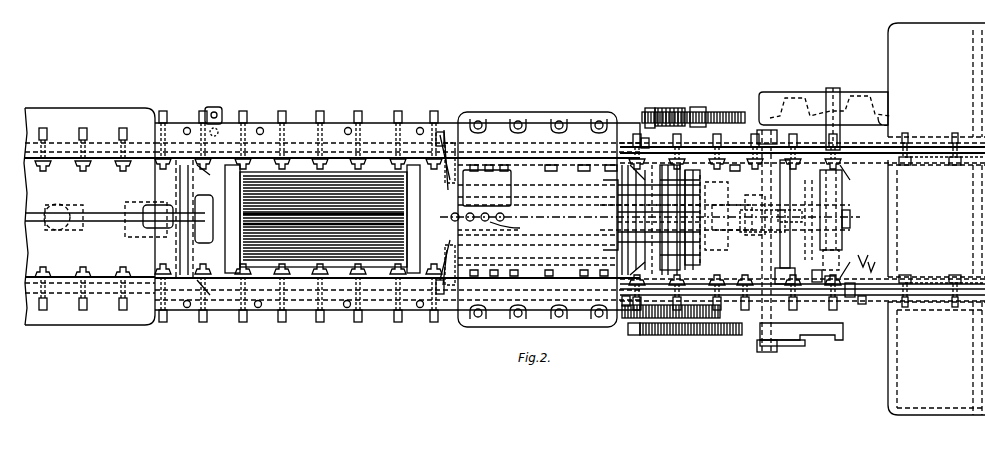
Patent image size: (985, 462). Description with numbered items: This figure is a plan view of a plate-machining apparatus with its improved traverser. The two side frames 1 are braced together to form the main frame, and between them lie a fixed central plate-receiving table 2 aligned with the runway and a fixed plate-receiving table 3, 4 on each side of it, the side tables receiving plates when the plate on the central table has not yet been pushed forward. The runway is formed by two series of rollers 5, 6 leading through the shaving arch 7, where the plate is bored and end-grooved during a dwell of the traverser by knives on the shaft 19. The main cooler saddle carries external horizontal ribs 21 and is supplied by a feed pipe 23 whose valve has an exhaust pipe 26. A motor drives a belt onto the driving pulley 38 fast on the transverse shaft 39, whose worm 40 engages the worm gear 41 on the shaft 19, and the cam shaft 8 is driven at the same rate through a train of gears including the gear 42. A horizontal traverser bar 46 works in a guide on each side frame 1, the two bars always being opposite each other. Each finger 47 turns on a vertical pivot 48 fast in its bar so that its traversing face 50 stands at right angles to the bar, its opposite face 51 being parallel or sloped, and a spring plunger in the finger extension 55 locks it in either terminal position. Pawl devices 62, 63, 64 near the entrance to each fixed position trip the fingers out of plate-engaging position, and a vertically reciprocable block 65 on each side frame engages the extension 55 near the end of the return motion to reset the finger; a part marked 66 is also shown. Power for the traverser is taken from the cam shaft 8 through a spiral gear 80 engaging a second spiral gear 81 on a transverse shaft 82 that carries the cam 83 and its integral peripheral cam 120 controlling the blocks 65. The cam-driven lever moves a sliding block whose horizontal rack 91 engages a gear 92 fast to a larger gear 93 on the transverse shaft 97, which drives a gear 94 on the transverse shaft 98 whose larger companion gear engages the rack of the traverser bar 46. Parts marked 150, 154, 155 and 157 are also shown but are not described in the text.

The side frame 1 is at (300, 328).
The central plate-receiving table 2 is at (936, 218).
The side plate-receiving table 3 is at (936, 358).
The side plate-receiving table 4 is at (936, 80).
The series of rollers 5 is at (585, 272).
The series of rollers 6 is at (755, 163).
The shaving arch 7 is at (535, 112).
The cam shaft 8 is at (755, 210).
The shaft 19 is at (857, 219).
The external horizontal ribs 21 is at (305, 172).
The feed pipe 23 is at (218, 108).
The exhaust pipe 26 is at (220, 128).
The driving pulley 38 is at (824, 102).
The transverse shaft 39 is at (832, 112).
The worm 40 is at (843, 207).
The worm gear 41 is at (838, 246).
The gear 42 is at (728, 205).
The horizontal traverser bar 46 is at (912, 147).
The finger 47 is at (751, 218).
The vertical pivot 48 is at (858, 300).
The traversing face 50 is at (838, 273).
The opposite face 51 is at (878, 269).
The finger extension 55 is at (842, 282).
The finger-tripping pawl device 62 is at (700, 170).
The finger-tripping pawl device 63 is at (452, 202).
The finger-tripping pawl device 64 is at (214, 236).
The block 65 is at (436, 135).
The pin 66 is at (874, 307).
The spiral gear 80 is at (778, 200).
The second spiral gear 81 is at (725, 228).
The transverse shaft 82 is at (761, 243).
The cam 83 is at (836, 338).
The horizontal rack 91 is at (622, 312).
The gear 92 is at (672, 335).
The larger gear 93 is at (722, 112).
The gear 94 is at (650, 108).
The transverse shaft 97 is at (698, 107).
The transverse shaft 98 is at (666, 108).
The peripheral cam 120 is at (762, 336).
The lever 150 is at (478, 228).
The roller 154 is at (505, 220).
The spring 155 is at (517, 235).
The block 157 is at (487, 188).